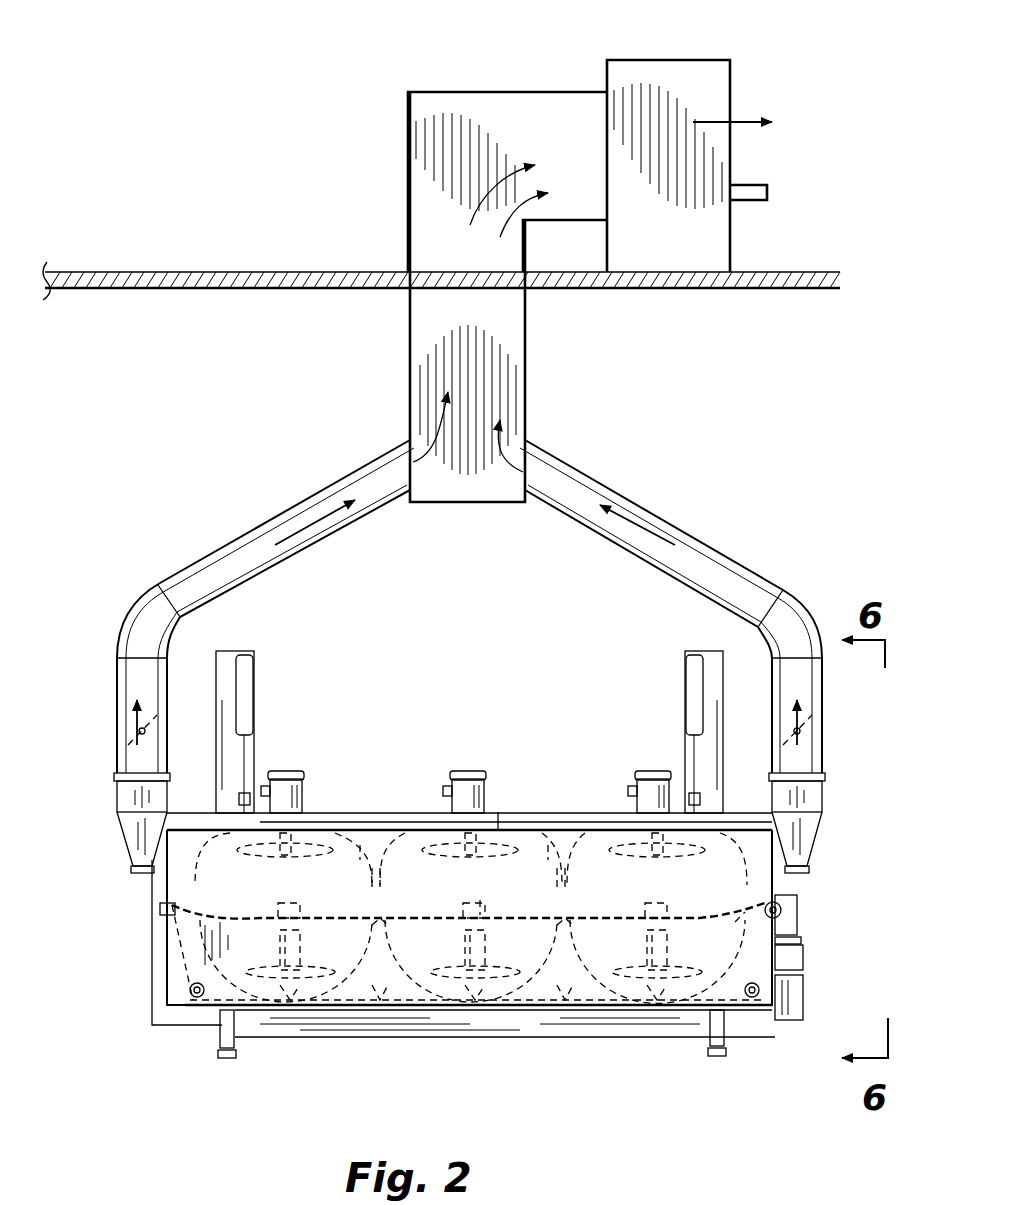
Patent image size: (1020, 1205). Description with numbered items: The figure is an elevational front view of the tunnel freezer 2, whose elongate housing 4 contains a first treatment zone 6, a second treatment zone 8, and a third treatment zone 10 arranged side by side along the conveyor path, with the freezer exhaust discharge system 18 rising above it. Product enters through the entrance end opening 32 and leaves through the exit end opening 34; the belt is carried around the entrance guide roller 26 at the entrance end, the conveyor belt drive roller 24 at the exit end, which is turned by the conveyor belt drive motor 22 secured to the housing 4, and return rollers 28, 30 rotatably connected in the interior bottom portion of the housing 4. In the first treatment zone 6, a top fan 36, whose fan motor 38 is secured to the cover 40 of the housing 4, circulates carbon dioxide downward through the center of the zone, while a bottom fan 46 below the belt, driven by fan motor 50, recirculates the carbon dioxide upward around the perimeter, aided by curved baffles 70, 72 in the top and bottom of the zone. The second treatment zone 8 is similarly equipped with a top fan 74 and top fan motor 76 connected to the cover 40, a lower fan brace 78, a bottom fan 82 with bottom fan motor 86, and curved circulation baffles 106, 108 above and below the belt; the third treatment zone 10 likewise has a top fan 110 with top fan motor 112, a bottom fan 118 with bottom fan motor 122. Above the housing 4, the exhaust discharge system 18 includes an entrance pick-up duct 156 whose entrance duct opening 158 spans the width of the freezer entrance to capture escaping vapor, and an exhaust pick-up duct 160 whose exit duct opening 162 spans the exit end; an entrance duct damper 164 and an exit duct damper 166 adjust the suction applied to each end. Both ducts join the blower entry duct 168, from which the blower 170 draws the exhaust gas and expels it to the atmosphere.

The tunnel freezer 2 is at (657, 488).
The elongate housing 4 is at (538, 812).
The first treatment zone 6 is at (343, 842).
The second treatment zone 8 is at (398, 842).
The third treatment zone 10 is at (582, 842).
The freezer exhaust discharge system 18 is at (275, 520).
The conveyor belt drive motor 22 is at (790, 965).
The conveyor belt drive roller 24 is at (790, 925).
The entrance guide roller 26 is at (167, 940).
The return roller 28 is at (190, 992).
The return roller 30 is at (745, 1000).
The entrance end opening 32 is at (158, 890).
The exit end opening 34 is at (778, 880).
The top fan 36 is at (258, 862).
The fan motor 38 is at (287, 770).
The cover 40 is at (497, 822).
The bottom fan 46 is at (300, 985).
The fan motor 50 is at (292, 956).
The curved baffle 70 is at (367, 855).
The curved baffle 72 is at (355, 975).
The top fan 74 is at (445, 862).
The top fan motor 76 is at (462, 770).
The lower fan brace 78 is at (488, 898).
The bottom fan 82 is at (478, 990).
The bottom fan motor 86 is at (490, 952).
The curved circulation baffle 106 is at (546, 850).
The curved circulation baffle 108 is at (548, 1006).
The top fan 110 is at (633, 855).
The top fan motor 112 is at (652, 770).
The bottom fan 118 is at (618, 975).
The bottom fan motor 122 is at (668, 955).
The entrance pick-up duct 156 is at (310, 566).
The entrance duct opening 158 is at (142, 872).
The exhaust pick-up duct 160 is at (645, 565).
The exit duct opening 162 is at (800, 875).
The entrance duct damper 164 is at (128, 735).
The exit duct damper 166 is at (808, 720).
The blower entry duct 168 is at (540, 112).
The blower 170 is at (647, 72).